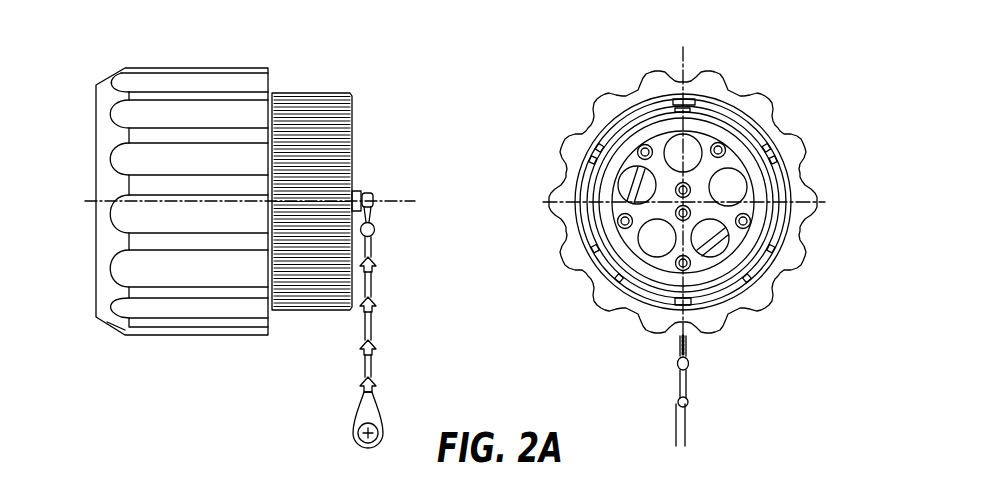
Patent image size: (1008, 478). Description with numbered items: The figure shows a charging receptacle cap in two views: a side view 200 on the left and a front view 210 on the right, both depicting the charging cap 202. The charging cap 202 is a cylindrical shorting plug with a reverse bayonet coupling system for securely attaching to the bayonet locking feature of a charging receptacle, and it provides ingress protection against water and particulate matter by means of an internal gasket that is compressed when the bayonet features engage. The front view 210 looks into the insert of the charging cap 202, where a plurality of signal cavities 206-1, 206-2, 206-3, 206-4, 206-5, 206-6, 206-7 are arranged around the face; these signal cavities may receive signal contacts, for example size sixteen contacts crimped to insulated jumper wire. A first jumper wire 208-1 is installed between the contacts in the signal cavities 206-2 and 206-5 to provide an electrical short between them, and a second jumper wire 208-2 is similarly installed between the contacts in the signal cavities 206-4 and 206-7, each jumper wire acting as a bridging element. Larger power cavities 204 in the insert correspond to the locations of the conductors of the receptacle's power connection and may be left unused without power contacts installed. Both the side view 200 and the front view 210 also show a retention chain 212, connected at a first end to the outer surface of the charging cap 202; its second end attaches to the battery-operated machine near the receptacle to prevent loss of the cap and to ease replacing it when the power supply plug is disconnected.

The side view 200 is at (86, 60).
The charging cap 202 is at (193, 68).
The power cavities 204 is at (735, 187).
The signal cavity 206-1 is at (721, 143).
The signal cavity 206-2 is at (643, 145).
The signal cavity 206-3 is at (676, 187).
The signal cavity 206-4 is at (751, 221).
The signal cavity 206-5 is at (617, 222).
The signal cavity 206-6 is at (690, 218).
The signal cavity 206-7 is at (686, 271).
The first jumper wire 208-1 is at (630, 182).
The second jumper wire 208-2 is at (708, 253).
The front view 210 is at (840, 49).
The retention chain 212 is at (374, 392).